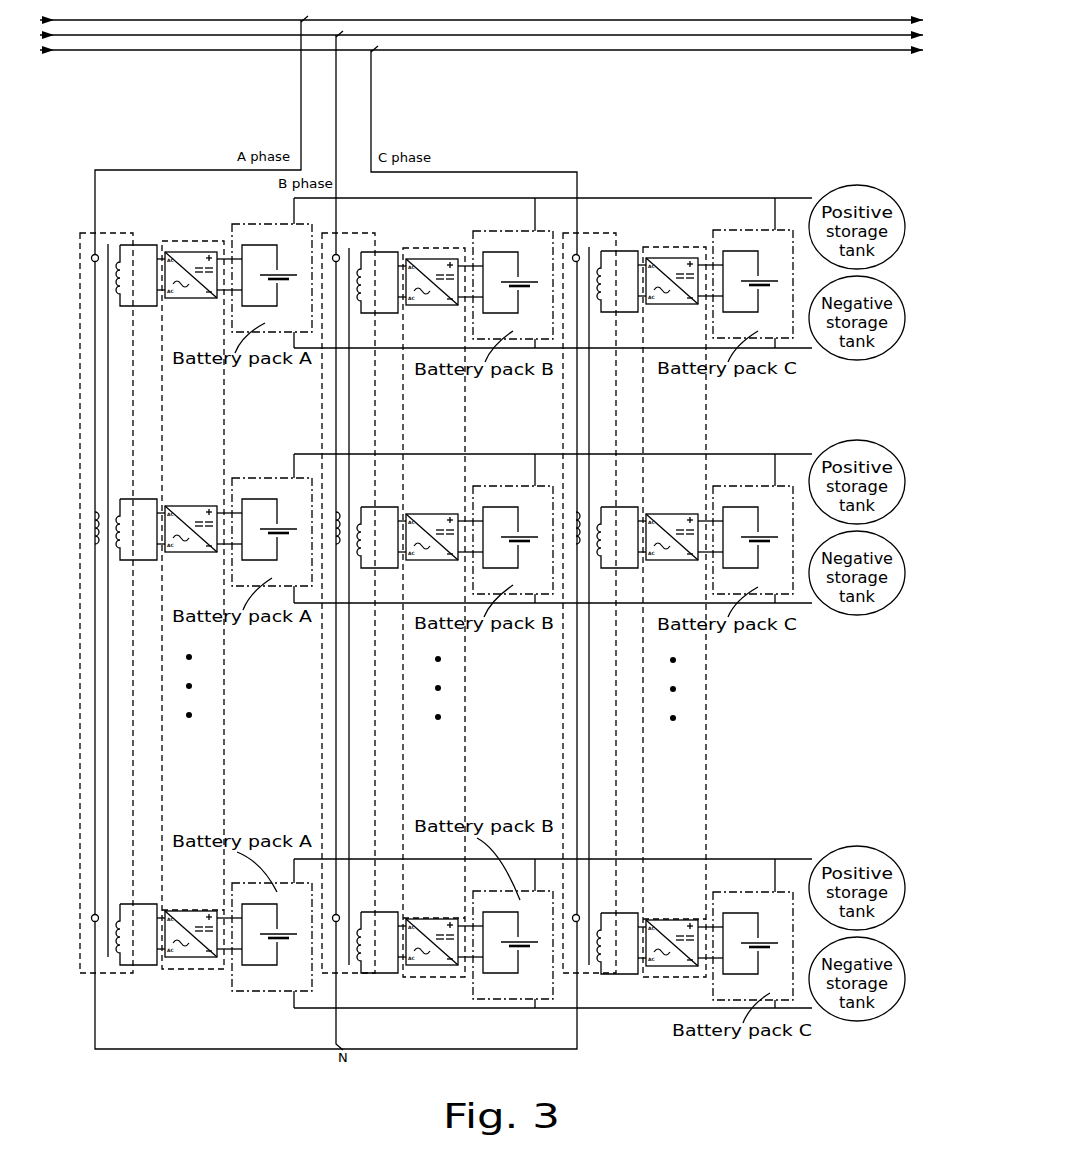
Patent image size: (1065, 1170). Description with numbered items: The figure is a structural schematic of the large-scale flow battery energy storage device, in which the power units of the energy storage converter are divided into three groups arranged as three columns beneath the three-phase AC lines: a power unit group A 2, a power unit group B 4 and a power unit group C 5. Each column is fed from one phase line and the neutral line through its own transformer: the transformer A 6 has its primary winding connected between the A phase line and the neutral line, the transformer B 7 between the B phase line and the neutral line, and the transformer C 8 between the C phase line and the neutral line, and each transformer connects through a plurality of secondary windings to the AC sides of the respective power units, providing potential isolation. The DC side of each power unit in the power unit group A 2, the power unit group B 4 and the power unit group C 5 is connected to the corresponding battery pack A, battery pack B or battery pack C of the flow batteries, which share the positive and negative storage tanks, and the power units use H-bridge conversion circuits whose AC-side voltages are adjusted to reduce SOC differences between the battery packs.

The power unit group A 2 is at (193, 970).
The power unit group B 4 is at (433, 977).
The power unit group C 5 is at (673, 977).
The transformer A 6 is at (110, 232).
The transformer B 7 is at (351, 232).
The transformer C 8 is at (592, 232).